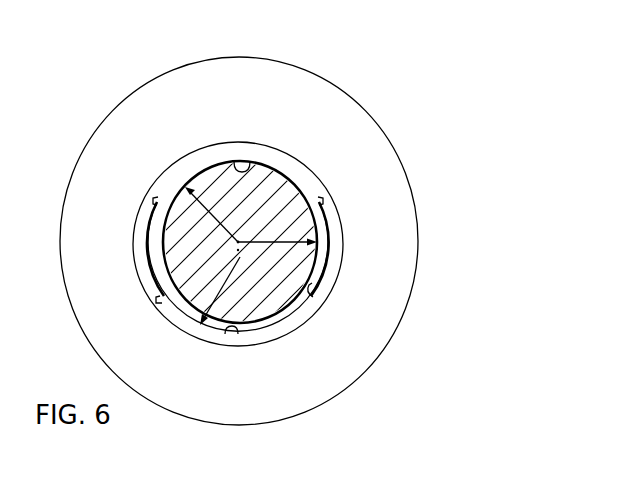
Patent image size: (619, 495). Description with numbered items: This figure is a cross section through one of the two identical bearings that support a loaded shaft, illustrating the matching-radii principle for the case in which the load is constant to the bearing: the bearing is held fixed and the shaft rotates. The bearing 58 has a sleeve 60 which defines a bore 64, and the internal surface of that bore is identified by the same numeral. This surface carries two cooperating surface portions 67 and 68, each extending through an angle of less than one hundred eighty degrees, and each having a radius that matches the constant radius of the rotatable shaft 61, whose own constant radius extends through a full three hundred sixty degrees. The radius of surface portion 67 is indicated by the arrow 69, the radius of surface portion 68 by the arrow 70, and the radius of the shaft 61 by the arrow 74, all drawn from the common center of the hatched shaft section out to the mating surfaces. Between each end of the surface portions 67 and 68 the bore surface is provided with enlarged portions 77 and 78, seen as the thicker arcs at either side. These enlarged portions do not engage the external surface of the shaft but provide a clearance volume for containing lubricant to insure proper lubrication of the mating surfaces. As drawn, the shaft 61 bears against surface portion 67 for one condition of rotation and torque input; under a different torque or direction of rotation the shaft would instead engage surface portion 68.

The bearing 58 is at (153, 93).
The sleeve 60 is at (174, 322).
The rotatable shaft 61 is at (293, 193).
The bore 64 is at (310, 288).
The cooperating surface portion 67 is at (236, 162).
The cooperating surface portion 68 is at (230, 334).
The radius of surface portion 67 69 is at (203, 206).
The radius of surface portion 68 70 is at (222, 285).
The radius of shaft 74 is at (264, 241).
The enlarged portion 77 is at (153, 272).
The enlarged portion 78 is at (322, 262).